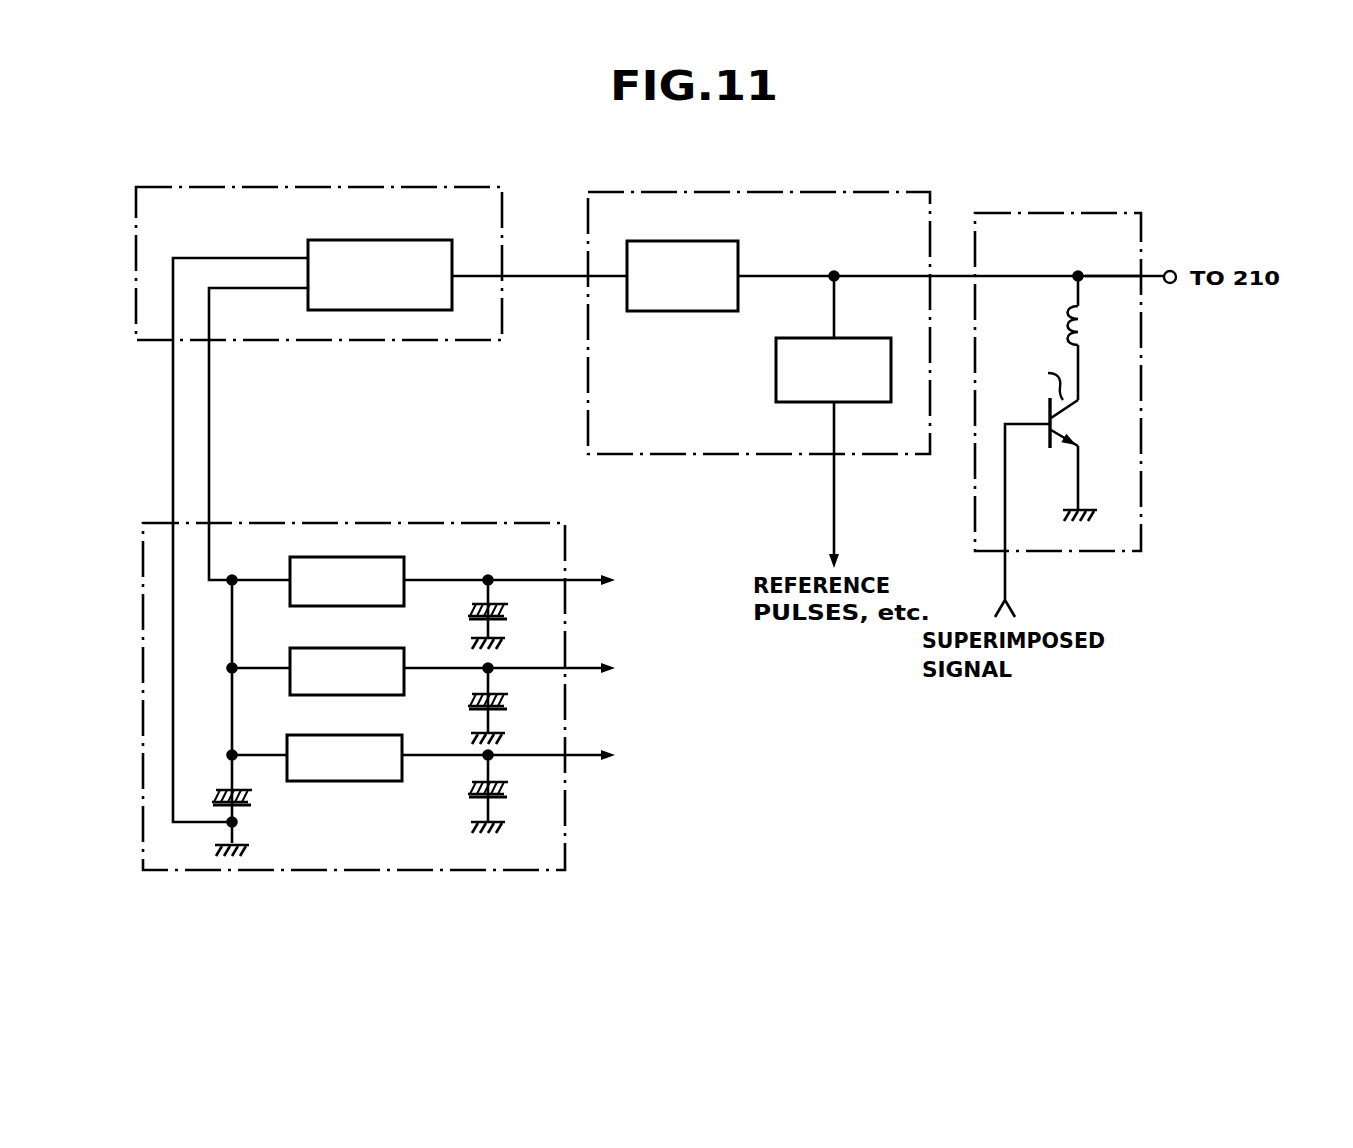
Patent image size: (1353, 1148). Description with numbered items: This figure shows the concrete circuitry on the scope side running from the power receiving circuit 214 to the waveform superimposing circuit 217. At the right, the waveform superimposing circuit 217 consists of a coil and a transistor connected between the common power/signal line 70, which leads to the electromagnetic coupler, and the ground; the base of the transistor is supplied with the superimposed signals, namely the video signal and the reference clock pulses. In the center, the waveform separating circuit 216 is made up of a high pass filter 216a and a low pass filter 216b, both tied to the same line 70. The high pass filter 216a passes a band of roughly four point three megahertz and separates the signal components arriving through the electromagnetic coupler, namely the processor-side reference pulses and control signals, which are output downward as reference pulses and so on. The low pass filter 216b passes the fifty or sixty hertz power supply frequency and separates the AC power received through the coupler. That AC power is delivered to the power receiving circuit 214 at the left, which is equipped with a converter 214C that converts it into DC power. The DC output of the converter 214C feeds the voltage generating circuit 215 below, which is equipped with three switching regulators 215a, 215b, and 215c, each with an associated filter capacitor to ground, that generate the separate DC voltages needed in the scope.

The power receiving circuit 214 is at (328, 491).
The converter 214C is at (342, 240).
The voltage generating circuit 215 is at (396, 681).
The switching regulator 215a is at (303, 557).
The switching regulator 215b is at (303, 648).
The switching regulator 215c is at (300, 736).
The waveform separating circuit 216 is at (769, 307).
The high pass filter 216a is at (905, 339).
The low pass filter 216b is at (636, 234).
The waveform superimposing circuit 217 is at (1065, 399).
The common power/signal line 70 is at (1115, 277).